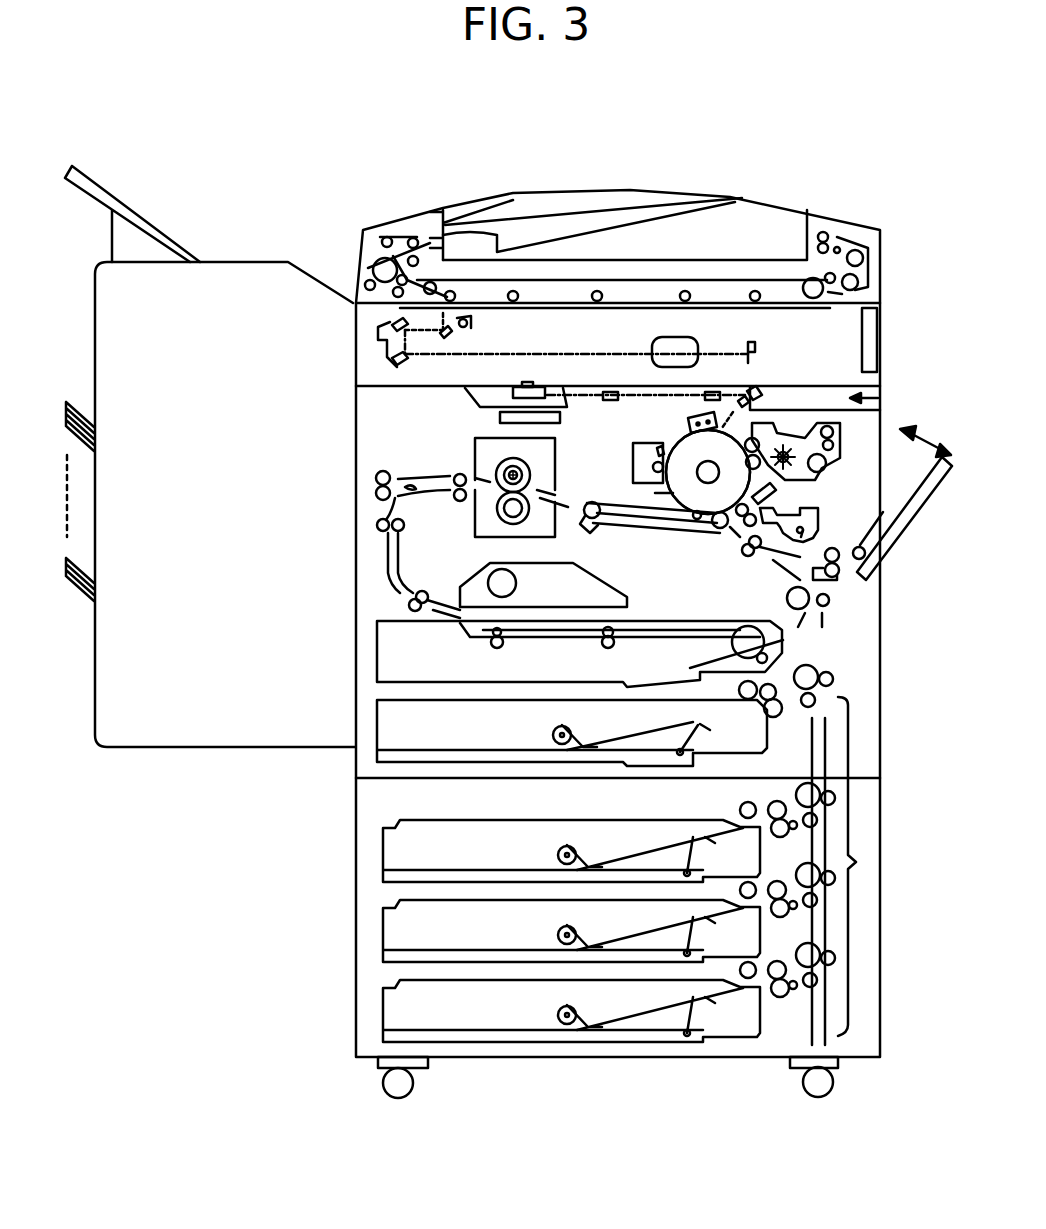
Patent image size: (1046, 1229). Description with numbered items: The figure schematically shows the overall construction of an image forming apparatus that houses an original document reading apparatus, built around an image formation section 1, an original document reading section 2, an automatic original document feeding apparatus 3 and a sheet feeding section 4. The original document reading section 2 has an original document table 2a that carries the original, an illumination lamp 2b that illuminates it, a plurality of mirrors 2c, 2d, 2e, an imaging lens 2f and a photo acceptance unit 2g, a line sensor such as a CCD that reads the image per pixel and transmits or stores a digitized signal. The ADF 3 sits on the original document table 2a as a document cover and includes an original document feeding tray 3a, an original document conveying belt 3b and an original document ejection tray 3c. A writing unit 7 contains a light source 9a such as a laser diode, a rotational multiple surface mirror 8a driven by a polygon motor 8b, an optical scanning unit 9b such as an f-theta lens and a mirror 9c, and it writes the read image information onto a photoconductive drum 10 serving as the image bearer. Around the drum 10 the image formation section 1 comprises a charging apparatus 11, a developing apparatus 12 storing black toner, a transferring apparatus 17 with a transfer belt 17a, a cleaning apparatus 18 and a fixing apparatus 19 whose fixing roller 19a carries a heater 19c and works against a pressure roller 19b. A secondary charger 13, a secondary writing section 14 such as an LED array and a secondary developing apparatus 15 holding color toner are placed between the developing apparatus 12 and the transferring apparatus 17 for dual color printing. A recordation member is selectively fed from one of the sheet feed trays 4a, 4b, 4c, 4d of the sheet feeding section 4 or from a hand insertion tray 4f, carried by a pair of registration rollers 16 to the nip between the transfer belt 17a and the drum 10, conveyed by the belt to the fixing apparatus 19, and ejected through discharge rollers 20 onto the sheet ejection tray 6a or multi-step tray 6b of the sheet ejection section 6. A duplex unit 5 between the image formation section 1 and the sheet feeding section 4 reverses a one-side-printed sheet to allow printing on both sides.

The image formation section 1 is at (880, 455).
The original document reading section 2 is at (878, 341).
The original document table 2a is at (593, 309).
The illumination lamp 2b is at (469, 322).
The mirror 2c is at (452, 338).
The mirror 2d is at (390, 327).
The mirror 2e is at (390, 360).
The imaging lens 2f is at (698, 342).
The photo acceptance unit 2g is at (758, 342).
The automatic original document feeding apparatus 3 is at (852, 212).
The original document feeding tray 3a is at (627, 217).
The original document conveying belt 3b is at (677, 280).
The original document ejection tray 3c is at (757, 258).
The sheet feeding section 4 is at (858, 866).
The sheet feed tray 4a is at (366, 724).
The sheet feed tray 4b is at (366, 849).
The sheet feed tray 4c is at (366, 923).
The sheet feed tray 4d is at (366, 1003).
The manual feed tray 4f is at (936, 487).
The duplex unit 5 is at (366, 644).
The sheet ejection section 6 is at (225, 747).
The sheet ejection tray 6a is at (157, 240).
The multi-step tray 6b is at (68, 598).
The writing unit 7 is at (880, 398).
The rotational multiple surface mirror 8a is at (510, 387).
The polygon motor 8b is at (497, 418).
The light source 9a is at (607, 391).
The optical scanning unit 9b is at (709, 391).
The mirror 9c is at (755, 391).
The photoconductive drum 10 is at (680, 434).
The charging apparatus 11 is at (690, 415).
The developing apparatus 12 is at (842, 452).
The secondary charger 13 is at (732, 482).
The secondary writing section 14 is at (778, 493).
The secondary developing apparatus 15 is at (823, 508).
The registration rollers 16 is at (748, 553).
The transferring apparatus 17 is at (652, 535).
The transfer belt 17a is at (613, 500).
The cleaning apparatus 18 is at (632, 446).
The fixing apparatus 19 is at (560, 533).
The fixing roller 19a is at (497, 464).
The pressure roller 19b is at (497, 508).
The heater 19c is at (500, 472).
The discharge rollers 20 is at (383, 470).